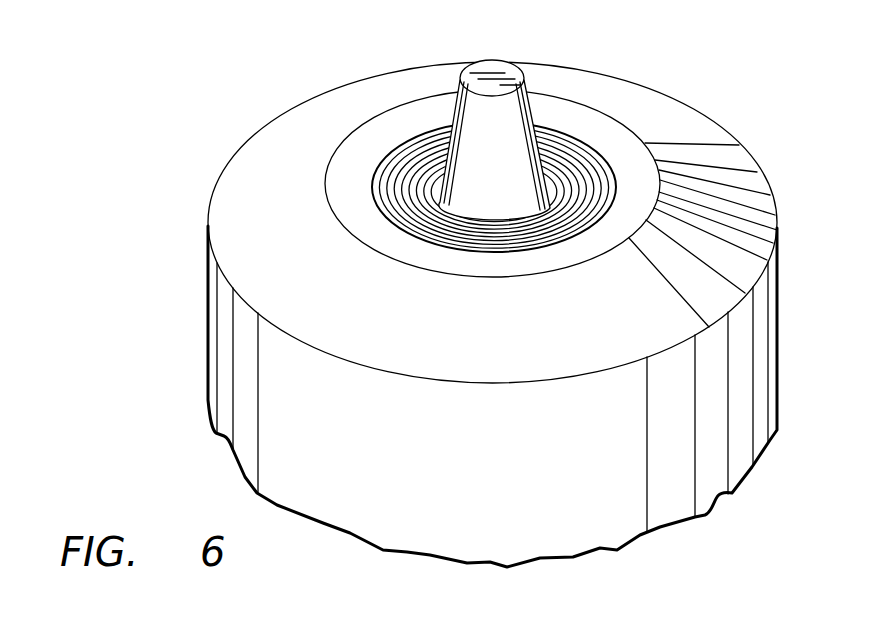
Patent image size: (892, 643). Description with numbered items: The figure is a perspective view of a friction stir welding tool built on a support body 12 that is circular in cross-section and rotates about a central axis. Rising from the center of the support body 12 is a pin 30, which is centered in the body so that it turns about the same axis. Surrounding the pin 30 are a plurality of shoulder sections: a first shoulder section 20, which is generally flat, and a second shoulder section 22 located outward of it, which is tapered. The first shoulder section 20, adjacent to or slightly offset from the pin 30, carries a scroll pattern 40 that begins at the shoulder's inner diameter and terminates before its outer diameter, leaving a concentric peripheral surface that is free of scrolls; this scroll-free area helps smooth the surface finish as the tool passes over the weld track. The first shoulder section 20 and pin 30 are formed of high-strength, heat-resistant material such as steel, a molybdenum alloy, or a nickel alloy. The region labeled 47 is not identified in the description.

The support body 12 is at (575, 503).
The first shoulder section 20 is at (601, 131).
The second shoulder section 22 is at (686, 118).
The pin 30 is at (477, 112).
The scroll pattern 40 is at (567, 152).
The flat annular surface 47 is at (647, 201).